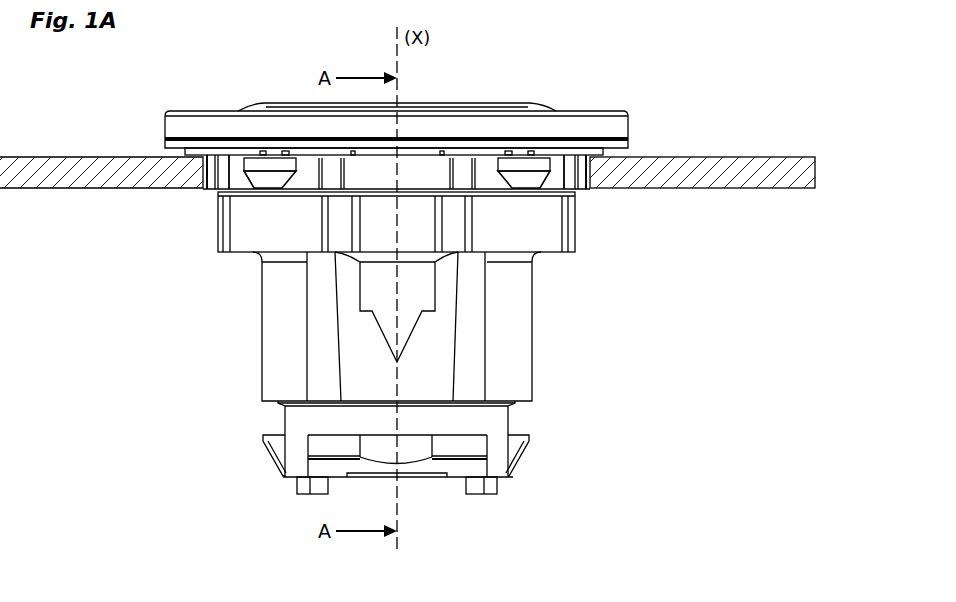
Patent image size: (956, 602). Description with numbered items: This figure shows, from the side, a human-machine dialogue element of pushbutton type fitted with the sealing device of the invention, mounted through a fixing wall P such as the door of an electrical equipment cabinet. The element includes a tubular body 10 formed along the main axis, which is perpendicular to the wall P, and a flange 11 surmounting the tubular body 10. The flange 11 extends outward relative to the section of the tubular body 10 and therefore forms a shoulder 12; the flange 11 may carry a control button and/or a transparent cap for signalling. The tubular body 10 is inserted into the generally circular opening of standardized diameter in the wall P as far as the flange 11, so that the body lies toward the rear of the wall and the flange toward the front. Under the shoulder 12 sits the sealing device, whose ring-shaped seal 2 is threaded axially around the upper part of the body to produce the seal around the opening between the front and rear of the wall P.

The seal 2 is at (177, 143).
The tubular body 10 is at (523, 326).
The flange 11 is at (177, 124).
The shoulder 12 is at (203, 157).
The fixing wall P is at (705, 168).